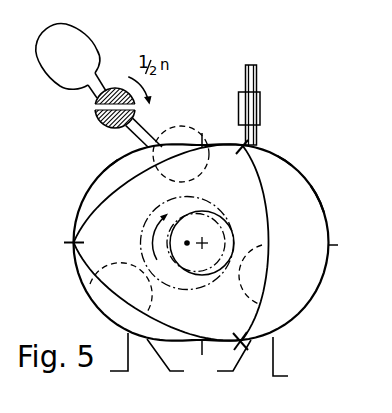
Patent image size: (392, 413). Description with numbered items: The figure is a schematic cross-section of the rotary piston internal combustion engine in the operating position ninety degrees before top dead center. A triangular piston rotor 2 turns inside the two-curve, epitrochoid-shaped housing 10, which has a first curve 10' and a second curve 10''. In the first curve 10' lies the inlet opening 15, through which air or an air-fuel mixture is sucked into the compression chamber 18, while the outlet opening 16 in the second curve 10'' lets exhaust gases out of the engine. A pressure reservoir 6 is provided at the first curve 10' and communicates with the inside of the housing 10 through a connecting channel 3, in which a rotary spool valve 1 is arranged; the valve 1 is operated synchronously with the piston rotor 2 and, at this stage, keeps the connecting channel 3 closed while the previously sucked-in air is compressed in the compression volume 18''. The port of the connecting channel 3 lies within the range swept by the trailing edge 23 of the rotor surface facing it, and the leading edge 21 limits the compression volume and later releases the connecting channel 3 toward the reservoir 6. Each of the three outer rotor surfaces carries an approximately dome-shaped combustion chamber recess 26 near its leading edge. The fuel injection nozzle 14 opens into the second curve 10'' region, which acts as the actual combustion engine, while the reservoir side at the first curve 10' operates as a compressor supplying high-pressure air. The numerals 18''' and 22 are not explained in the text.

The rotary spool valve 1 is at (114, 88).
The piston rotor 2 is at (154, 242).
The connecting channel 3 is at (144, 131).
The pressure reservoir 6 is at (70, 44).
The housing 10 is at (233, 244).
The first curve 10' is at (89, 152).
The second curve 10'' is at (311, 149).
The fuel injection nozzle 14 is at (249, 106).
The inlet opening 15 is at (143, 353).
The outlet opening 16 is at (258, 348).
The compression chamber 18 is at (142, 292).
The compression volume 18'' is at (141, 193).
The housing wall section 18''' is at (343, 198).
The leading edge 21 is at (241, 146).
The apex seal 22 is at (243, 352).
The trailing edge 23 is at (72, 243).
The combustion chamber recess 26 is at (187, 145).